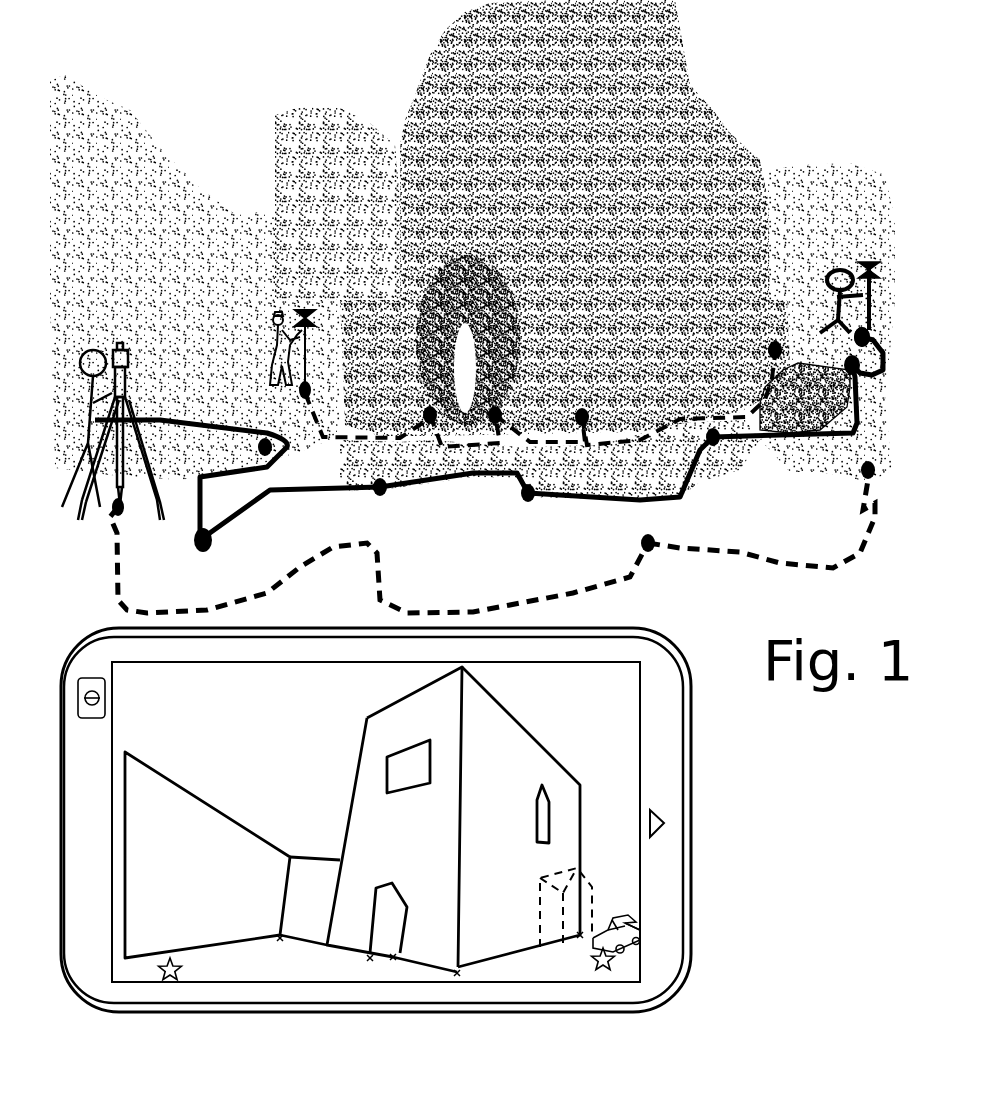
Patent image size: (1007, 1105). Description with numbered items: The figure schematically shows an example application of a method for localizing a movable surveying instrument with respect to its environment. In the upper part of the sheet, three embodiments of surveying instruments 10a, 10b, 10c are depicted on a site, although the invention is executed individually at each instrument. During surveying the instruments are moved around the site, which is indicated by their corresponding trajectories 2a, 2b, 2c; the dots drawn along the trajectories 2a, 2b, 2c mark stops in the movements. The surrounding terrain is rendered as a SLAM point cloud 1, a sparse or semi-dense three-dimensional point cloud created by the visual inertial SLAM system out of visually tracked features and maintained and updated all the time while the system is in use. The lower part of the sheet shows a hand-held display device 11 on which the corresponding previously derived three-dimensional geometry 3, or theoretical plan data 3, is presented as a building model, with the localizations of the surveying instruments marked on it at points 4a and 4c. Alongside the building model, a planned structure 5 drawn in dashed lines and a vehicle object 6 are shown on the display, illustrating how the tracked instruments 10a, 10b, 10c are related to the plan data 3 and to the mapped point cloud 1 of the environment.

The SLAM point cloud 1 is at (724, 76).
The trajectory 2a is at (742, 420).
The trajectory 2b is at (697, 482).
The trajectory 2c is at (742, 550).
The previously derived 3D-geometry or theoretical plan data 3 is at (602, 775).
The measured points 4a is at (596, 1032).
The marked points 4c is at (705, 1003).
The planned structure 5 is at (593, 890).
The vehicle object 6 is at (633, 927).
The surveying instrument 10a is at (320, 520).
The surveying instrument 10b is at (865, 262).
The surveying instrument 10c is at (118, 512).
The tablet display device 11 is at (675, 937).